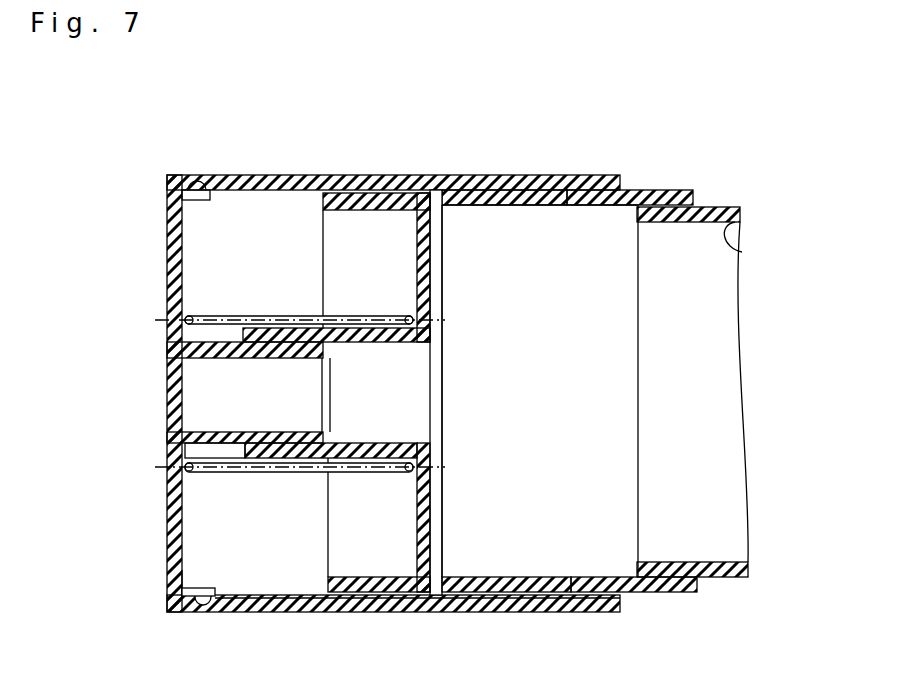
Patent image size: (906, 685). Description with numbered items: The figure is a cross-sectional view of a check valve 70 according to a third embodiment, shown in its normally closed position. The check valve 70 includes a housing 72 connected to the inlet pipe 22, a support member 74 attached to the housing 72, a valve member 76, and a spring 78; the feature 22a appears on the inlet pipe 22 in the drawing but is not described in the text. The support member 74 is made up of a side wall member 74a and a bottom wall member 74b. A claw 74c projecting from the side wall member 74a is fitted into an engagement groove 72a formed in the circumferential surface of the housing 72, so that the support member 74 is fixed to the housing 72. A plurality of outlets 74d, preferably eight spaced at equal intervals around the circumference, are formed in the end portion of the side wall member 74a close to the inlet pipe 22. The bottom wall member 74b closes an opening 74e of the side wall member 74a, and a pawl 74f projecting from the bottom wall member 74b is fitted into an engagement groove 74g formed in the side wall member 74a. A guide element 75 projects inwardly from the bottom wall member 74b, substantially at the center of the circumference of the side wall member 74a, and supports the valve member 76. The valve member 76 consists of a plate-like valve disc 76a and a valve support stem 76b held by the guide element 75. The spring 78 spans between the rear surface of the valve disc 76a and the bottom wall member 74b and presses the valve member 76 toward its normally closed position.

The check valve 70 is at (544, 125).
The housing 72 is at (447, 185).
The engagement groove 72a is at (640, 195).
The support member 74 is at (245, 123).
The side wall member 74a is at (253, 178).
The bottom wall member 74b is at (168, 238).
The claw 74c is at (593, 190).
The outlets 74d is at (380, 177).
The opening 74e is at (190, 574).
The pawl 74f is at (205, 592).
The engagement groove 74g is at (207, 610).
The guide element 75 is at (212, 358).
The valve member 76 is at (543, 298).
The valve disc 76a is at (425, 420).
The valve support stem 76b is at (365, 333).
The spring 78 is at (212, 315).
The inlet pipe 22 is at (728, 208).
The frame member lip 22a is at (742, 252).